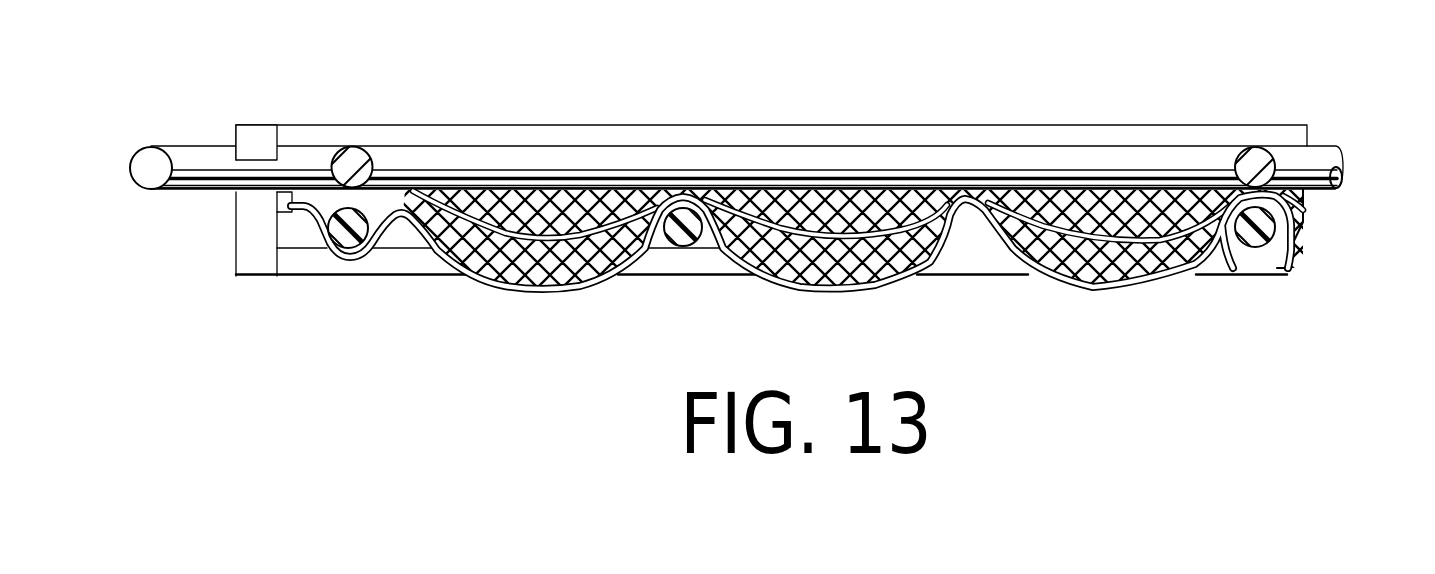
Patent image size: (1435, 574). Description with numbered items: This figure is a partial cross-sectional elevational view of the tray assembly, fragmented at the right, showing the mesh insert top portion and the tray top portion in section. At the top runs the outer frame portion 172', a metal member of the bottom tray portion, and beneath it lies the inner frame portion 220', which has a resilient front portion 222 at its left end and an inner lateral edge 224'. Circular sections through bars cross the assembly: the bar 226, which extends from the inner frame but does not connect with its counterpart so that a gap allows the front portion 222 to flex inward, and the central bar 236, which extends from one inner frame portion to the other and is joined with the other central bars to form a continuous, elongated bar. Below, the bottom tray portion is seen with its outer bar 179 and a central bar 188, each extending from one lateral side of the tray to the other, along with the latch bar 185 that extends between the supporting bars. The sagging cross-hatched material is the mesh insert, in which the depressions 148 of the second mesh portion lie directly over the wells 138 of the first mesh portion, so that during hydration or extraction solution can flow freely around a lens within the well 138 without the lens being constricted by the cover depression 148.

The well 138 is at (491, 266).
The depression 148 is at (556, 194).
The outer frame portion 172' is at (771, 145).
The outer bar 179 is at (688, 248).
The latch bar 185 is at (345, 249).
The central bar 188 is at (1252, 248).
The inner frame portion 220' is at (747, 113).
The front portion 222 is at (137, 189).
The inner lateral edge 224' is at (744, 115).
The bar 226 is at (370, 150).
The central bar 236 is at (1270, 152).